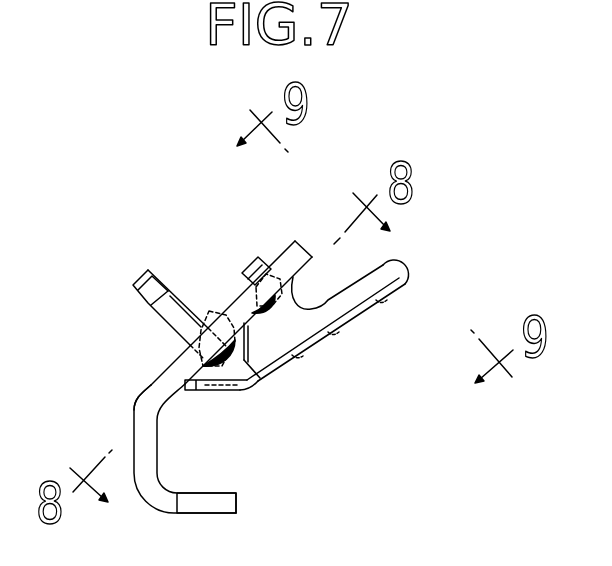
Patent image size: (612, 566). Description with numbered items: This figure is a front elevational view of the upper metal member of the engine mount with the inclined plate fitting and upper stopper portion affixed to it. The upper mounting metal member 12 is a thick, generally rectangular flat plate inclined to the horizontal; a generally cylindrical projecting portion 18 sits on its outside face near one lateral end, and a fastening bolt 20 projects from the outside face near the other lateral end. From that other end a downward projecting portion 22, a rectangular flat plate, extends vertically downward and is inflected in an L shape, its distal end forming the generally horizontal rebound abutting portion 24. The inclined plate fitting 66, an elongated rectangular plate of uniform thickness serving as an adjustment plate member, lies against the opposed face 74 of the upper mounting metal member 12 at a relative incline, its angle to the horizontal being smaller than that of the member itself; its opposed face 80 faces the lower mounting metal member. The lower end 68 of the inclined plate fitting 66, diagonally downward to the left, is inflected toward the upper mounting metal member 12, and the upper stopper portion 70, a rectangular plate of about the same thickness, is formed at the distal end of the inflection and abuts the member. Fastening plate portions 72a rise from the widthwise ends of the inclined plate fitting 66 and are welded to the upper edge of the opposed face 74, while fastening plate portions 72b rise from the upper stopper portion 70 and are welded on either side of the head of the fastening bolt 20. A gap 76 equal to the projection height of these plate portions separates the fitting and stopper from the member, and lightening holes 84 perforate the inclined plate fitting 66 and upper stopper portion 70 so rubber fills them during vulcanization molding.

The upper mounting metal member 12 is at (286, 254).
The projecting portion 18 is at (251, 266).
The fastening bolt 20 is at (175, 297).
The downward projecting portion 22 is at (143, 428).
The rebound abutting portion 24 is at (205, 506).
The inclined plate fitting 66 is at (369, 311).
The lower end 68 is at (252, 384).
The upper stopper portion 70 is at (233, 392).
The fastening plate portion 72a is at (332, 302).
The fastening plate portion 72b is at (231, 352).
The opposed face 74 is at (153, 388).
The gap 76 is at (326, 250).
The opposed face 80 is at (287, 367).
The lightening holes 84 is at (219, 396).